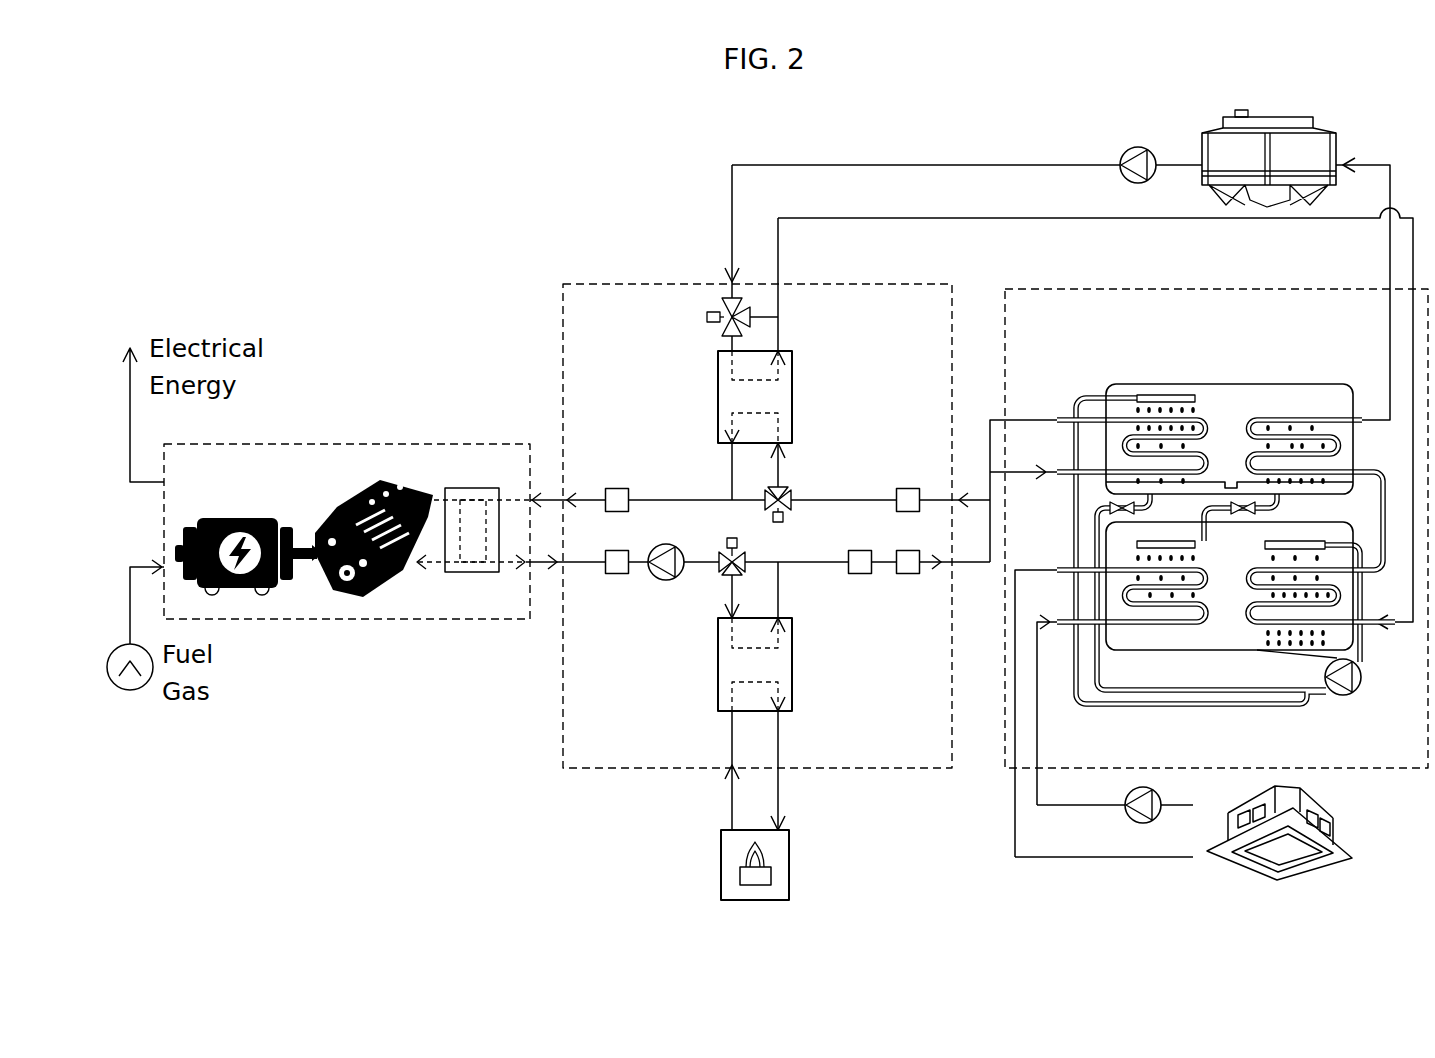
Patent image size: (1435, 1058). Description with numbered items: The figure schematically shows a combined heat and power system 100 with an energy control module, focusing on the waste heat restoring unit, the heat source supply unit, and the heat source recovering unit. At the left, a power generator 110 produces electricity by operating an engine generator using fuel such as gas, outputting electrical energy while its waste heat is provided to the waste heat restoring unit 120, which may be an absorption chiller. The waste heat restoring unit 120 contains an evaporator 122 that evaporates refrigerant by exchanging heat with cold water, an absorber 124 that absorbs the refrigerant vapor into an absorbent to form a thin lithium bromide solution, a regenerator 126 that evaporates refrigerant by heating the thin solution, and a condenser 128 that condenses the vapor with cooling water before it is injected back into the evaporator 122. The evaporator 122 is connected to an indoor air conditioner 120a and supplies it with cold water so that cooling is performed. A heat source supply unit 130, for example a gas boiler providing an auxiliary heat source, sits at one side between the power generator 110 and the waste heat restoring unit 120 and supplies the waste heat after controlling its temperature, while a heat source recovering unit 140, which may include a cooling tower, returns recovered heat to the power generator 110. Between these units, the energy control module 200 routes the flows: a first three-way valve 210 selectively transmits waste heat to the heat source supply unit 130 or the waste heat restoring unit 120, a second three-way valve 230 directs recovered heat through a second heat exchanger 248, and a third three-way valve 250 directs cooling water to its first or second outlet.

The combined heat and power system 100 is at (400, 195).
The power generator 110 is at (370, 444).
The waste heat restoring unit 120 is at (1209, 545).
The indoor air conditioner 120a is at (1330, 815).
The evaporator 122 is at (1152, 610).
The absorber 124 is at (1256, 585).
The regenerator 126 is at (1208, 400).
The condenser 128 is at (1258, 400).
The heat source supply unit 130 is at (791, 865).
The heat source recovering unit 140 is at (1200, 152).
The energy control module 200 is at (769, 497).
The first 3-way valve 210 is at (716, 580).
The second 3-way valve 230 is at (795, 490).
The second heat exchanger 248 is at (716, 395).
The third 3-way valve 250 is at (705, 300).